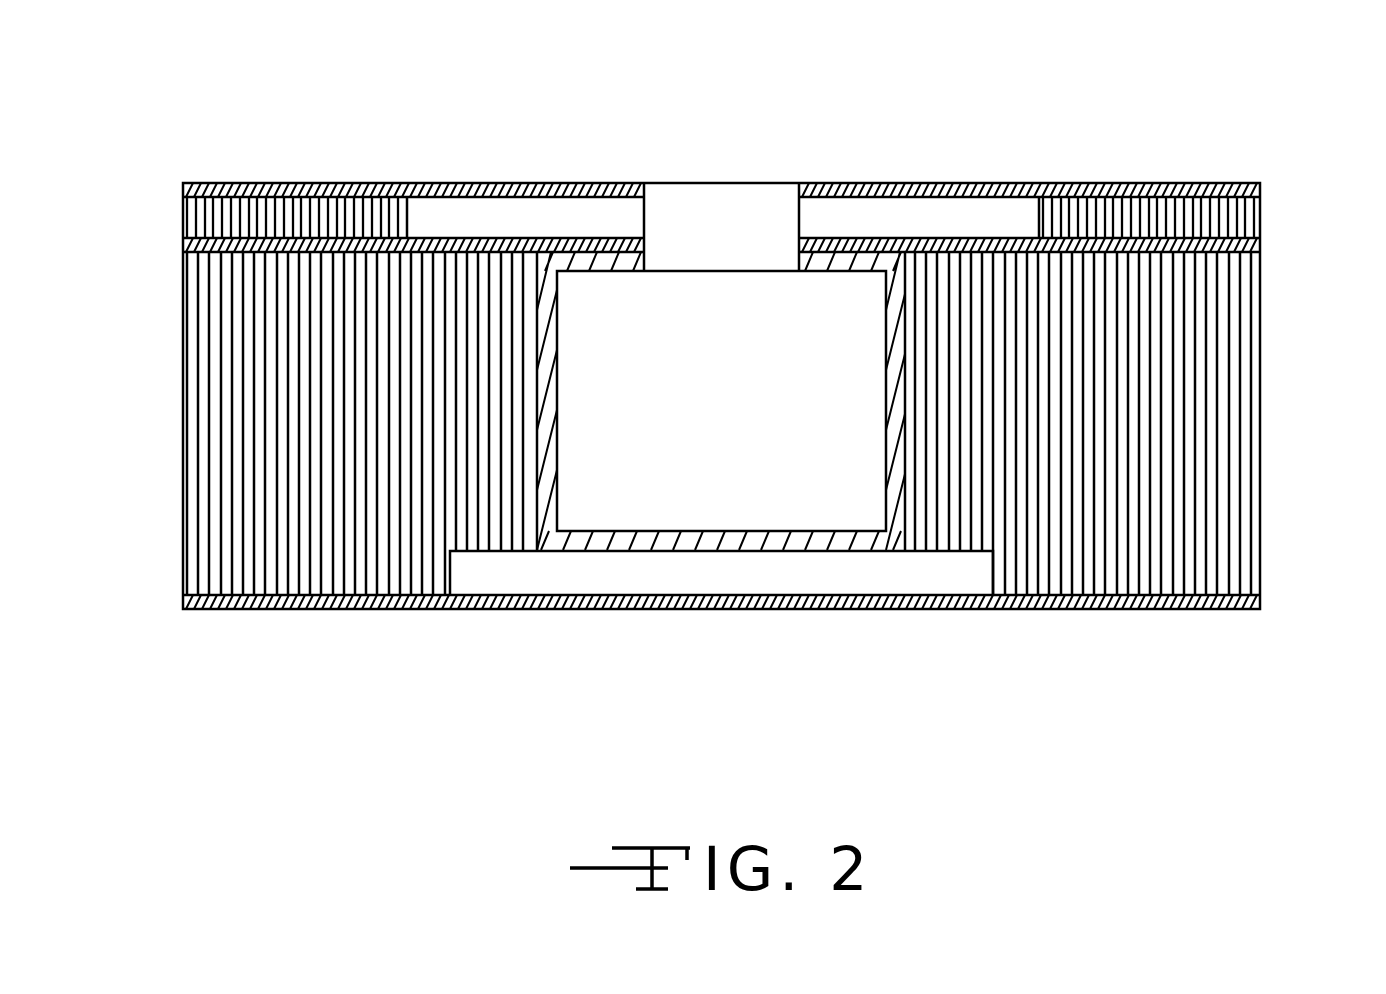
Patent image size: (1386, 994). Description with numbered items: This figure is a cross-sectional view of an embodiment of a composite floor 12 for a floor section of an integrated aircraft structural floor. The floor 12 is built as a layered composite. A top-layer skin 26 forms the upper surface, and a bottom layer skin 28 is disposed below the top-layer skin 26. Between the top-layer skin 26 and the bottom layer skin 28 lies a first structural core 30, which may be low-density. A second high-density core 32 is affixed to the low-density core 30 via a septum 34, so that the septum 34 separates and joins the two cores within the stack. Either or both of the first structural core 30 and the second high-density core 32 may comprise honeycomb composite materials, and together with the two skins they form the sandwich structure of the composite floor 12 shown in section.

The floor 12 is at (112, 128).
The top-layer skin 26 is at (1135, 176).
The second high-density core 32 is at (1272, 211).
The septum 34 is at (1272, 245).
The first structural core 30 is at (1243, 507).
The bottom layer skin 28 is at (535, 616).